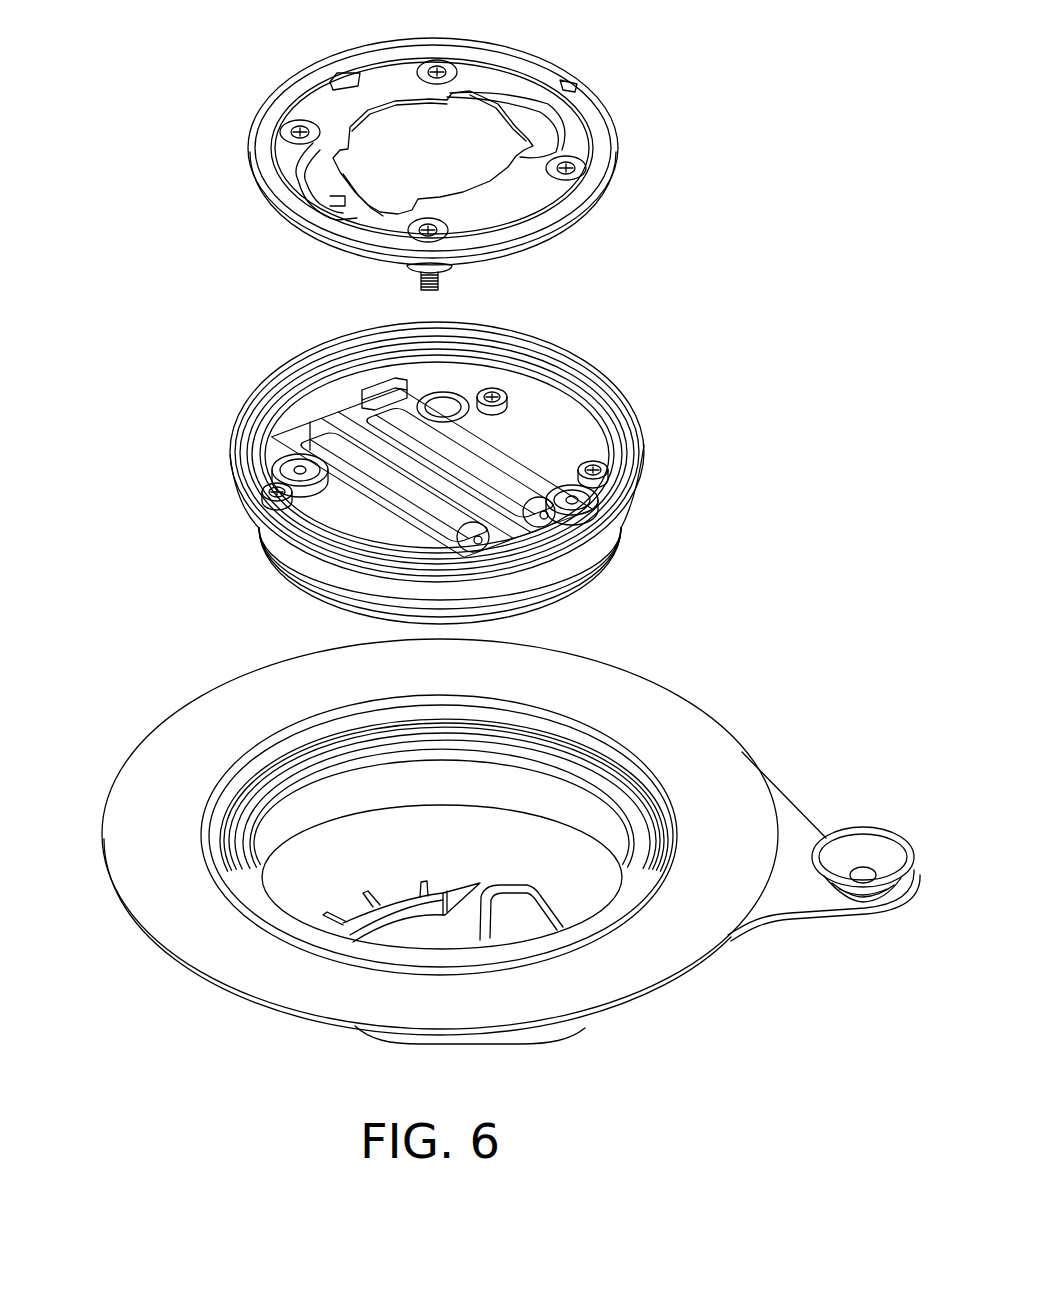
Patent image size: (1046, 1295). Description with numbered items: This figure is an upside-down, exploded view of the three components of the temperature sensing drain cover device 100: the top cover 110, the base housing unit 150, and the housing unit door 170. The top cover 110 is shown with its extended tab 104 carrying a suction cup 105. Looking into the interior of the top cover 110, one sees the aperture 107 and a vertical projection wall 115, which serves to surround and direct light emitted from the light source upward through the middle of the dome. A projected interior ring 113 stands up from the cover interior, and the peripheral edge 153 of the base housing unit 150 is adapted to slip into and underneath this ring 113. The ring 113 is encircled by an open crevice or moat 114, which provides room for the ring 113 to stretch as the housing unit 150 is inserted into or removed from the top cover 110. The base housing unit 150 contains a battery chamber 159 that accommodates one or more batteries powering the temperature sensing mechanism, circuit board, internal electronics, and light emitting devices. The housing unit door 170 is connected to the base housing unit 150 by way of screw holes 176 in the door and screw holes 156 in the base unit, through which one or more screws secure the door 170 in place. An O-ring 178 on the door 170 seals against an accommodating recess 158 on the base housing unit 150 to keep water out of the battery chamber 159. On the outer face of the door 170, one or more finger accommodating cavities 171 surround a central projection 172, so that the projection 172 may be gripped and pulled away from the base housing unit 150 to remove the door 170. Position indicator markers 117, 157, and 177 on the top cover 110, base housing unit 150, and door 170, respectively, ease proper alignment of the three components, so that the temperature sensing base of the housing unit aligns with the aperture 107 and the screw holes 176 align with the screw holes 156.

The device 100 is at (125, 20).
The extended tab 104 is at (780, 927).
The suction cup 105 is at (868, 830).
The aperture 107 is at (510, 892).
The top cover 110 is at (185, 968).
The projected interior ring 113 is at (254, 816).
The open crevice or moat 114 is at (211, 843).
The vertical projection wall 115 is at (402, 897).
The position indicator marker 117 is at (644, 731).
The base housing unit 150 is at (262, 545).
The peripheral edge 153 is at (235, 440).
The screw holes 156 is at (575, 500).
The position indicator marker 157 is at (668, 361).
The accommodating recess 158 is at (248, 423).
The battery chamber 159 is at (337, 425).
The housing unit door 170 is at (262, 196).
The finger accommodating cavities 171 is at (315, 178).
The central projection 172 is at (413, 160).
The screw holes 176 is at (573, 172).
The position indicator marker 177 is at (580, 86).
The O-ring 178 is at (337, 247).